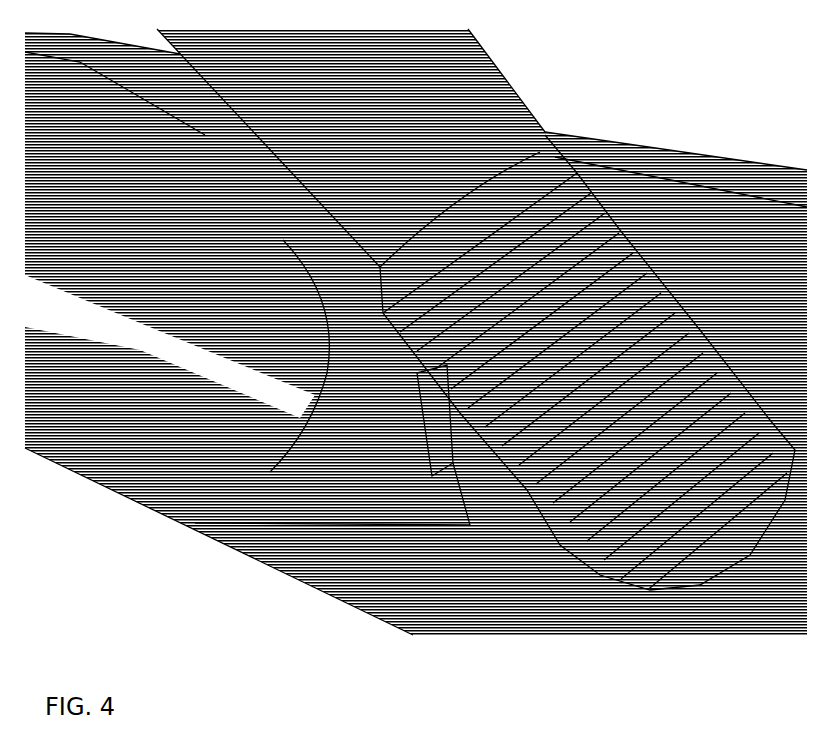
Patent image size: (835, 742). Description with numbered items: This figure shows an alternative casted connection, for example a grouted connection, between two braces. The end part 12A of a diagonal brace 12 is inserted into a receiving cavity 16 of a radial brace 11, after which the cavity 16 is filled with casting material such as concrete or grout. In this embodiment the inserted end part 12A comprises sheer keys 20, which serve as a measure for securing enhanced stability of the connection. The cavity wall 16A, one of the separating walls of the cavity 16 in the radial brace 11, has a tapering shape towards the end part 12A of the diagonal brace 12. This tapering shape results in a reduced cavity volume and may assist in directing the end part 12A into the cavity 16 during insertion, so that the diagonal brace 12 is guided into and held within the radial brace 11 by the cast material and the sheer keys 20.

The radial brace 11 is at (718, 165).
The diagonal brace 12 is at (517, 90).
The end part 12A is at (470, 525).
The receiving cavity 16 is at (337, 548).
The cavity wall 16A is at (290, 253).
The sheer keys 20 is at (558, 548).